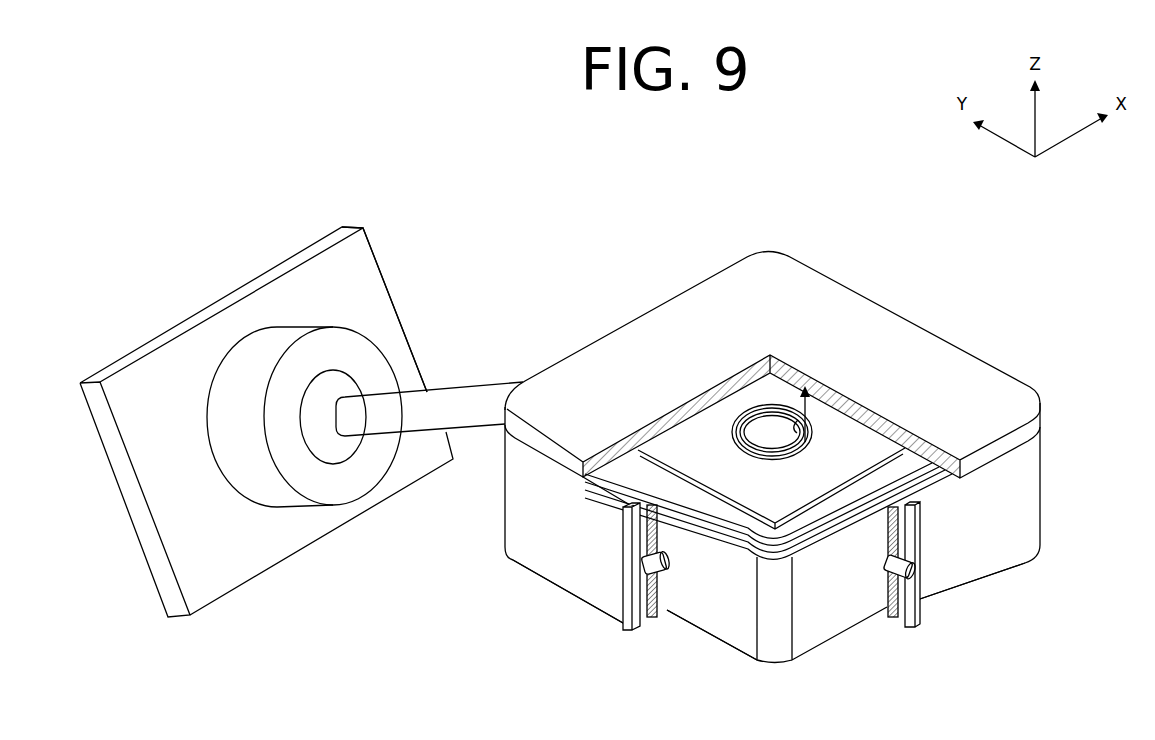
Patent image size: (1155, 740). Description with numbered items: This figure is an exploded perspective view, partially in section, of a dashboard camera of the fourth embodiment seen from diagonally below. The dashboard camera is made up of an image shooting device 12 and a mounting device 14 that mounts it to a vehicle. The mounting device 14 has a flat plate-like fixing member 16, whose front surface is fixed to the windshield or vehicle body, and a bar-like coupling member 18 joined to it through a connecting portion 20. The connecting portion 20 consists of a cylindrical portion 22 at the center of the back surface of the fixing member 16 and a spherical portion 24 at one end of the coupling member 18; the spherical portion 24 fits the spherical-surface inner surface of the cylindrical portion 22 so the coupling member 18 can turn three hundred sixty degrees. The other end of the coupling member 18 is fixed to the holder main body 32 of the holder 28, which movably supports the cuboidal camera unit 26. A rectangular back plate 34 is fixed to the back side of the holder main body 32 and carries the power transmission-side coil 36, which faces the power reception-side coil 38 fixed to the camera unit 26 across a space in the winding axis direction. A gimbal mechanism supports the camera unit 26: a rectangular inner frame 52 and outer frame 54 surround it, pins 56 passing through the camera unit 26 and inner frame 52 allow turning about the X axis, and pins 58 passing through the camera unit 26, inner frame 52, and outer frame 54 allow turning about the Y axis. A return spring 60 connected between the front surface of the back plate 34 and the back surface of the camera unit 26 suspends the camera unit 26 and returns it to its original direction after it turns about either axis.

The image shooting device 12 is at (799, 461).
The mounting device 14 is at (413, 333).
The fixing member 16 is at (375, 298).
The coupling member 18 is at (465, 410).
The connecting portion 20 is at (309, 516).
The cylindrical portion 22 is at (270, 490).
The spherical portion 24 is at (340, 448).
The camera unit 26 is at (729, 660).
The holder 28 is at (518, 572).
The holder main body 32 is at (1046, 475).
The back plate 34 is at (780, 272).
The power transmission-side coil 36 is at (856, 480).
The power reception-side coil 38 is at (708, 528).
The inner frame 52 is at (890, 595).
The outer frame 54 is at (990, 567).
The pins for turning about X axis 56 is at (662, 570).
The pins for turning about Y axis 58 is at (920, 575).
The return spring 60 is at (743, 410).